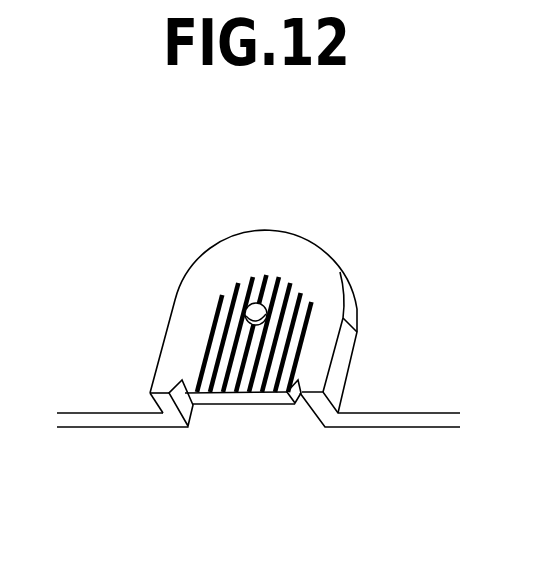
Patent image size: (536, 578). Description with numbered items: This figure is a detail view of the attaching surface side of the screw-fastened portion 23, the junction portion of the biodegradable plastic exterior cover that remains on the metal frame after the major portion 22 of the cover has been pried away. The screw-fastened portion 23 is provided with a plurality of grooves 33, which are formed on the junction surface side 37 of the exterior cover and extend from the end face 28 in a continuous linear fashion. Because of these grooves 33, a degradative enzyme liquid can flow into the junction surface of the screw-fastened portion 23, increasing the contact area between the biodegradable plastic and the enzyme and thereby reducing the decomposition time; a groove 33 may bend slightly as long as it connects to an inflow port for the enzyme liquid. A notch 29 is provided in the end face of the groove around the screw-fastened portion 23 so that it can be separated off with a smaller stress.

The major portion 22 is at (402, 365).
The screw-fastened portion 23 is at (208, 257).
The end face 28 is at (238, 403).
The notch 29 is at (298, 403).
The grooves 33 is at (262, 278).
The junction surface side 37 is at (316, 272).